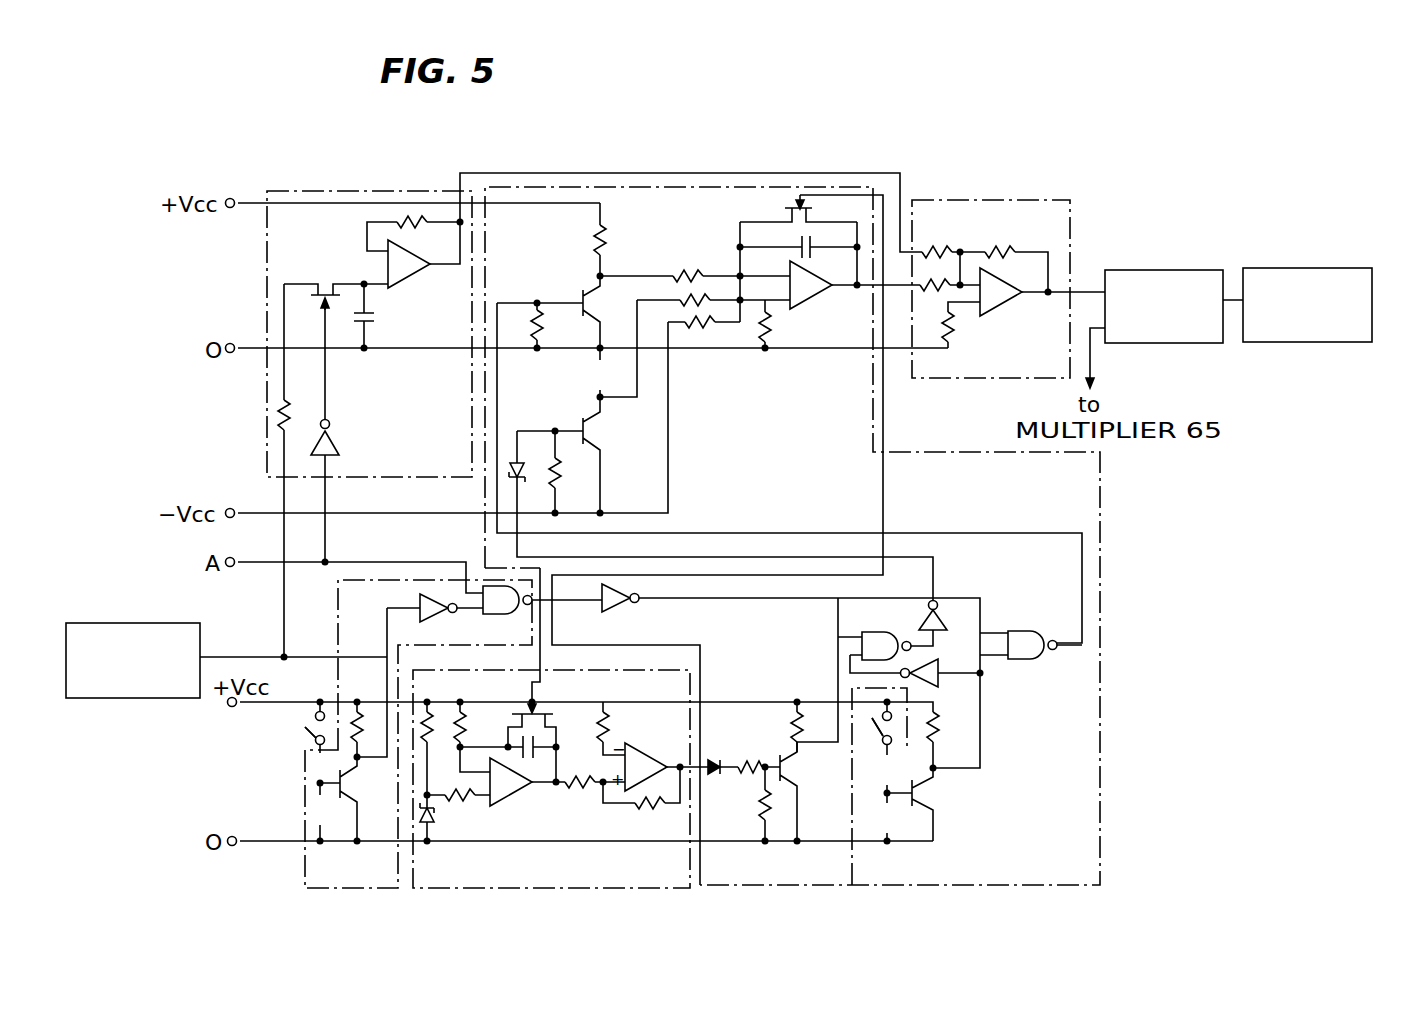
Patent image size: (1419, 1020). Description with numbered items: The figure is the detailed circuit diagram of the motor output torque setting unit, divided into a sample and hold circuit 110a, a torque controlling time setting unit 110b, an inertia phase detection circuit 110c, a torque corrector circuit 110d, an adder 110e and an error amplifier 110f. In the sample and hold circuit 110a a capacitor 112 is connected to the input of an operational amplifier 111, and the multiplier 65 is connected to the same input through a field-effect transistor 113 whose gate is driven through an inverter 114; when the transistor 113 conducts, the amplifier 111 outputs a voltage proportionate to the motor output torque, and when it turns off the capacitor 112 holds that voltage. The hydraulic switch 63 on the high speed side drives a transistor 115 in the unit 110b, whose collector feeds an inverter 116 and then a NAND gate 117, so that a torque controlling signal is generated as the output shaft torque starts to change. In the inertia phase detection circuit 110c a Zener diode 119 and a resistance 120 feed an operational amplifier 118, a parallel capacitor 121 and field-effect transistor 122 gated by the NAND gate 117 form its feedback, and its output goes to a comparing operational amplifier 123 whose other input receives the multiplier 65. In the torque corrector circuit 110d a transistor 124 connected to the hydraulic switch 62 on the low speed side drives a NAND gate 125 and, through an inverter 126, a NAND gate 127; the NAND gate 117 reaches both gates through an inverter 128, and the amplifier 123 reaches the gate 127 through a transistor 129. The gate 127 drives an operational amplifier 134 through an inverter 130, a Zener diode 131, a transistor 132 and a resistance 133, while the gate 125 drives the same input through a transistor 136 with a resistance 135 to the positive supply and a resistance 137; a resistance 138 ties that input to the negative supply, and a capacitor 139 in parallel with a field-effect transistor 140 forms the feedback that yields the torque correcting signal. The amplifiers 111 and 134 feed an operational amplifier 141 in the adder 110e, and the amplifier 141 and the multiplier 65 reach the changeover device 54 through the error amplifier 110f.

The changeover device 54 is at (1290, 268).
The hydraulic switch on the low speed side 62 is at (870, 720).
The hydraulic switch on the high speed side 63 is at (308, 736).
The multiplier 65 is at (124, 624).
The sample and hold circuit 110a is at (340, 190).
The torque controlling time setting unit 110b is at (318, 890).
The inertia phase detection circuit 110c is at (508, 888).
The torque corrector circuit 110d is at (652, 186).
The adder 110e is at (980, 200).
The error amplifier 110f is at (1150, 270).
The operational amplifier 111 is at (406, 278).
The capacitor 112 is at (370, 320).
The field-effect transistor 113 is at (320, 286).
The inverter 114 is at (337, 442).
The transistor 115 is at (352, 786).
The inverter 116 is at (432, 616).
The NAND gate 117 is at (514, 616).
The operational amplifier 118 is at (520, 786).
The Zener diode 119 is at (439, 816).
The resistance 120 is at (436, 714).
The capacitor 121 is at (542, 740).
The field-effect transistor 122 is at (539, 708).
The comparing operational amplifier 123 is at (647, 760).
The transistor 124 is at (938, 794).
The NAND gate 125 is at (1012, 632).
The inverter 126 is at (938, 676).
The NAND gate 127 is at (864, 644).
The inverter 128 is at (620, 610).
The transistor 129 is at (788, 764).
The inverter 130 is at (938, 604).
The Zener diode 131 is at (521, 460).
The transistor 132 is at (598, 434).
The resistance 133 is at (694, 325).
The operational amplifier 134 is at (811, 296).
The resistance 135 is at (604, 234).
The transistor 136 is at (590, 294).
The resistance 137 is at (688, 266).
The resistance 138 is at (712, 334).
The capacitor 139 is at (800, 246).
The field-effect transistor 140 is at (808, 208).
The operational amplifier 141 is at (1002, 312).